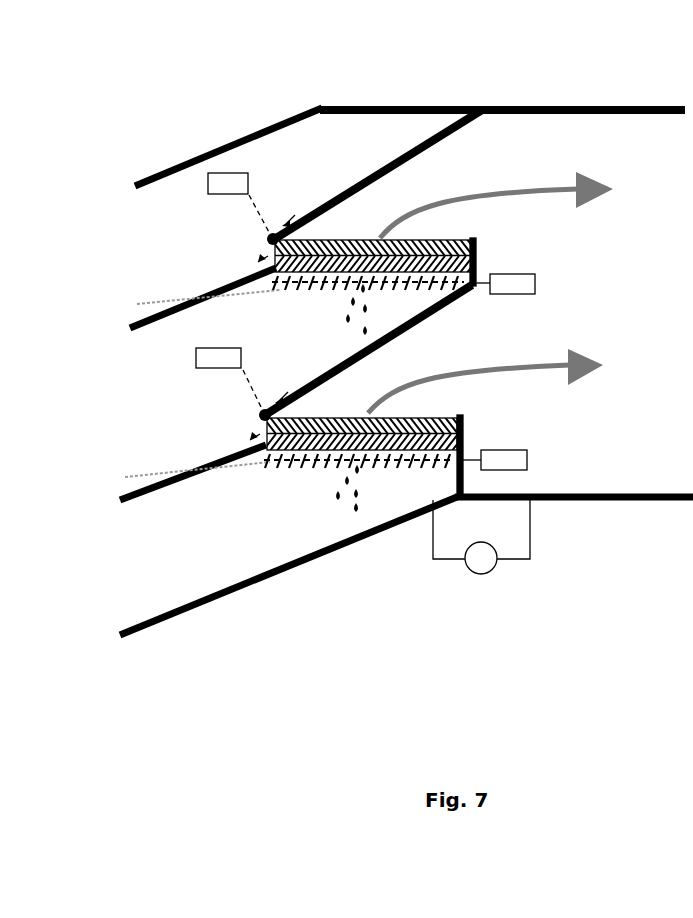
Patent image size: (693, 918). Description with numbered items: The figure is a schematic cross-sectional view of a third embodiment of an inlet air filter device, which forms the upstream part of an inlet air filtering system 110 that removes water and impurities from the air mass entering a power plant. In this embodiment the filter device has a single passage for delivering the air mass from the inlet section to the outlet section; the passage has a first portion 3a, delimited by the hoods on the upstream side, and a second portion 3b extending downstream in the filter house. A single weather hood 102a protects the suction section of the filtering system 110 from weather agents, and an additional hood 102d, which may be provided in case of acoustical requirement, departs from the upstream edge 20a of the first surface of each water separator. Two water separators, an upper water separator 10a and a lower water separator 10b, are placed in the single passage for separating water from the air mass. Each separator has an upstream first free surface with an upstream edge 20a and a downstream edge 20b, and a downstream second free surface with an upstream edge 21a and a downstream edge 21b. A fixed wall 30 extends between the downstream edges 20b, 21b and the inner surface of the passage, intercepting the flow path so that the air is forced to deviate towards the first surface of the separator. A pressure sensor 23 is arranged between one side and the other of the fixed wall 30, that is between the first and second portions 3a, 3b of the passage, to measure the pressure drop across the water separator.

The inlet air filtering system 110 is at (541, 108).
The weather hood 102a is at (182, 163).
The additional hood 102d is at (160, 312).
The upper water separator 10a is at (438, 240).
The lower water separator 10b is at (455, 418).
The upstream edge of second surface 21a is at (268, 237).
The downstream edge of second surface 21b is at (476, 237).
The upstream edge of first surface 20a is at (270, 272).
The downstream edge of first surface 20b is at (477, 283).
The fixed wall 30 is at (470, 485).
The pressure sensor 23 is at (495, 568).
The first portion of passage 3a is at (87, 363).
The second portion of passage 3b is at (612, 271).